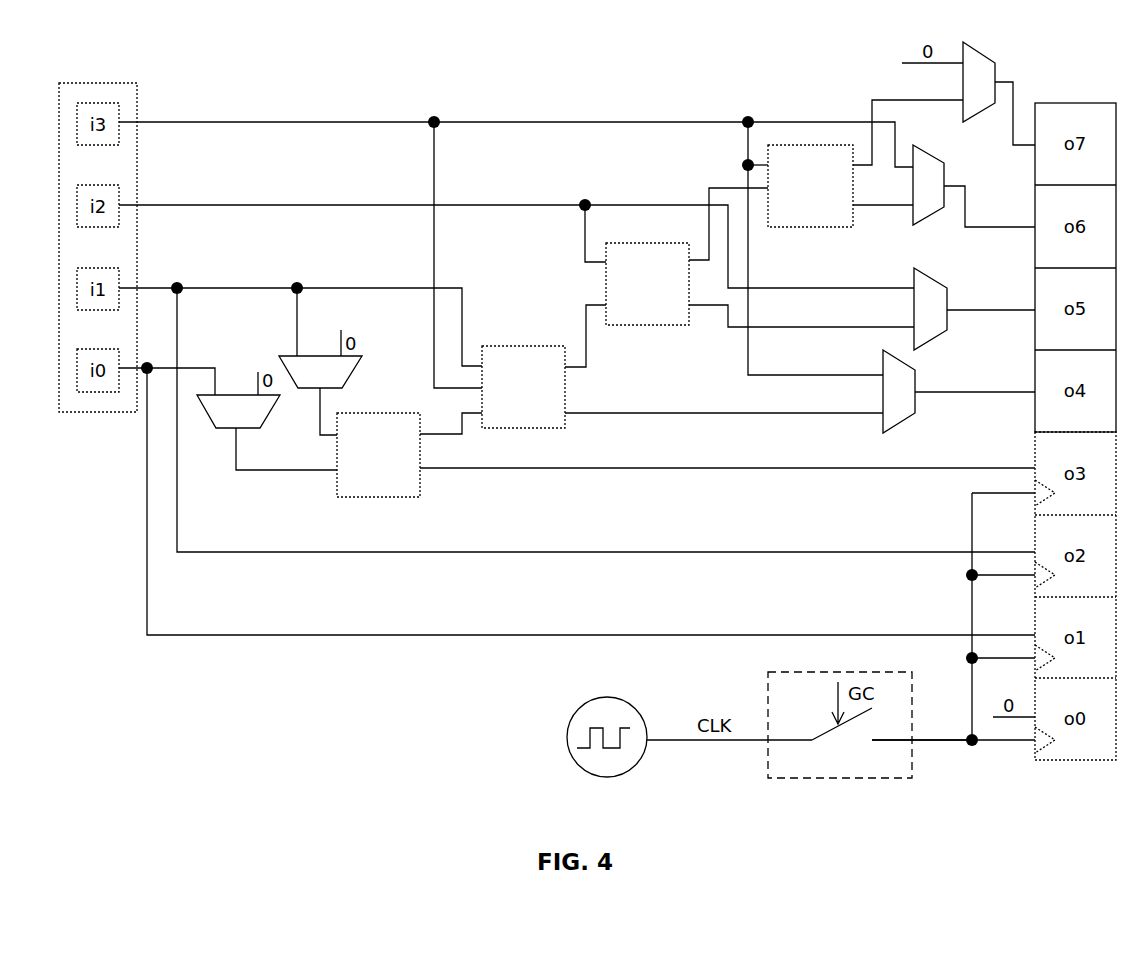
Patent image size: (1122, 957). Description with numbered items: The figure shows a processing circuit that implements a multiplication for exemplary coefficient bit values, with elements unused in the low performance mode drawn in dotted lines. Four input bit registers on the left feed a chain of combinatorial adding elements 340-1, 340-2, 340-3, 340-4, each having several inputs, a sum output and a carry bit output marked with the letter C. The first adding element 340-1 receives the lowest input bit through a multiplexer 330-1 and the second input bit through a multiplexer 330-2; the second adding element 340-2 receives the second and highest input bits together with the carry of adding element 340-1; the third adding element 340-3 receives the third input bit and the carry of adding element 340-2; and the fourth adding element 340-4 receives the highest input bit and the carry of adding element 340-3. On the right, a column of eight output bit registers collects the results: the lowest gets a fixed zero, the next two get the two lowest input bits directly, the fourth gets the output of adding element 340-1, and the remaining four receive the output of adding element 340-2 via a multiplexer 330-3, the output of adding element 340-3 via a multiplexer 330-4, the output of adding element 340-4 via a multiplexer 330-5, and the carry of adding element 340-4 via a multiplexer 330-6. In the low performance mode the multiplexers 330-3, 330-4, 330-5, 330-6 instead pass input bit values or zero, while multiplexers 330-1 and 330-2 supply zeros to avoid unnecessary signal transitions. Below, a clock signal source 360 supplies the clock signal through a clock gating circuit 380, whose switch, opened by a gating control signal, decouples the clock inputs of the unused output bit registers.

The multiplexer 330-1 is at (232, 432).
The multiplexer 330-2 is at (312, 392).
The multiplexer 330-3 is at (905, 418).
The multiplexer 330-4 is at (938, 335).
The multiplexer 330-5 is at (935, 212).
The multiplexer 330-6 is at (968, 125).
The adding element 340-1 is at (422, 480).
The adding element 340-2 is at (522, 346).
The adding element 340-3 is at (645, 328).
The adding element 340-4 is at (805, 229).
The clock signal source 360 is at (567, 738).
The clock gating circuit 380 is at (845, 779).